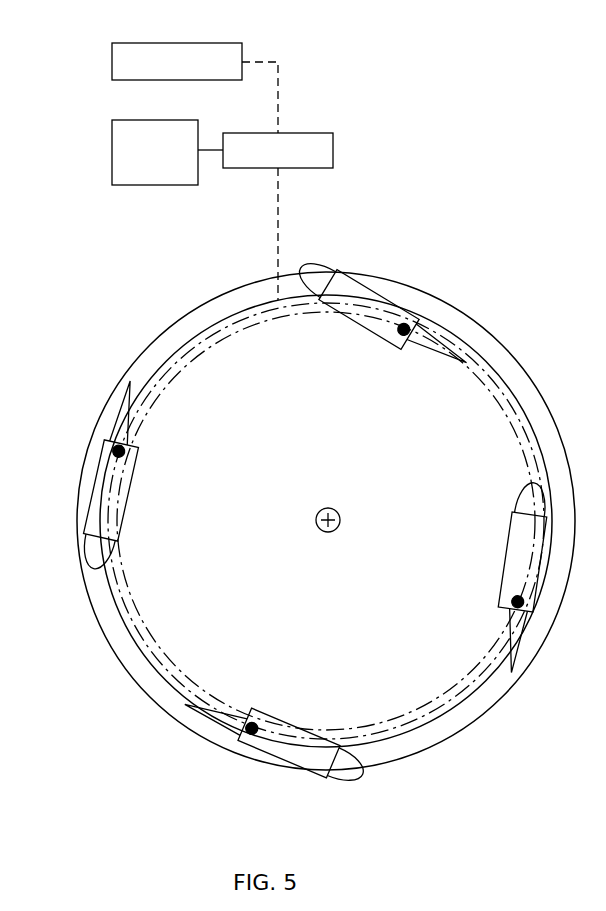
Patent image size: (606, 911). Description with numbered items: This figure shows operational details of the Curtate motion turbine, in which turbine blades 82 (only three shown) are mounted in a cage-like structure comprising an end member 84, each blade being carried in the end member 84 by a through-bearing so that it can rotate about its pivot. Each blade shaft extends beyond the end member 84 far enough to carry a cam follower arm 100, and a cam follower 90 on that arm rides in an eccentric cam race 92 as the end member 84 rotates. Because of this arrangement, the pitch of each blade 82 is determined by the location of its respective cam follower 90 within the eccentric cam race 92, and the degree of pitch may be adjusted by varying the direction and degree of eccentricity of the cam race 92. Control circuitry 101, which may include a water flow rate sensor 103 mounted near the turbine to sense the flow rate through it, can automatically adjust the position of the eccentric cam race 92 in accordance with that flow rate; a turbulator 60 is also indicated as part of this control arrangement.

The turbulator 60 is at (112, 57).
The water flow rate sensor 103 is at (112, 148).
The control circuitry 101 is at (333, 148).
The end member 84 is at (415, 287).
The eccentric cam race 92 is at (187, 355).
The cam follower arm 100 is at (358, 298).
The turbine blade 82 is at (317, 260).
The cam follower 90 is at (412, 325).